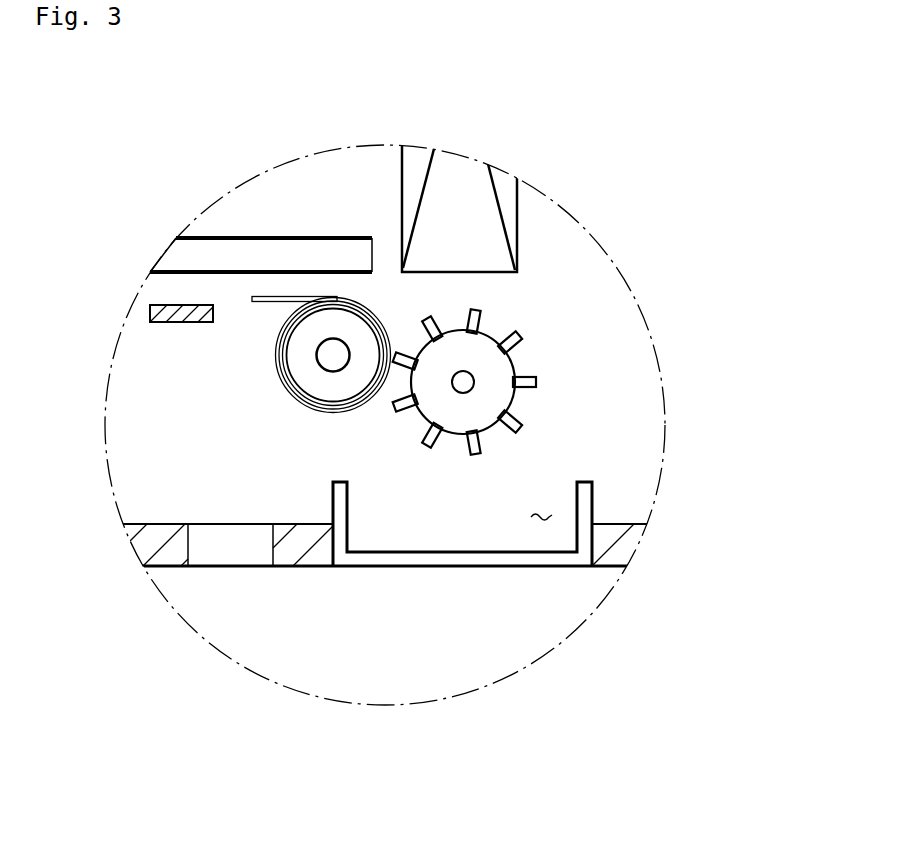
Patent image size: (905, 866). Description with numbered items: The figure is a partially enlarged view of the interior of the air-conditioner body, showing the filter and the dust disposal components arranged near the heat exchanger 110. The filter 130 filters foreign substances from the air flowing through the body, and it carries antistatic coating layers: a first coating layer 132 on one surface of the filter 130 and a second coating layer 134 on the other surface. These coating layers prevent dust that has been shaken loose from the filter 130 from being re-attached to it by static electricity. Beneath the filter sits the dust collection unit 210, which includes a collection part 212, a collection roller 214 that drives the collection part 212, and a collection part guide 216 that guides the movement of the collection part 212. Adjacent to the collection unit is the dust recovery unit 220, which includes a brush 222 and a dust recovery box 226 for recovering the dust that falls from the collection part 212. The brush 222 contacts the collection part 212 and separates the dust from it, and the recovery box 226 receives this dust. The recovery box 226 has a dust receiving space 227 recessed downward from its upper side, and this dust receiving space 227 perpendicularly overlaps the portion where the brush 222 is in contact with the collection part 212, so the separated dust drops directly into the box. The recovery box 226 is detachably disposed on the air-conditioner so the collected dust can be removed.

The heat exchanger 110 is at (462, 182).
The filter 130 is at (177, 257).
The first coating layer 132 is at (190, 232).
The second coating layer 134 is at (233, 273).
The dust collection unit 210 is at (343, 78).
The collection part 212 is at (282, 297).
The collection roller 214 is at (337, 322).
The collection part guide 216 is at (197, 305).
The dust recovery unit 220 is at (763, 313).
The brush 222 is at (538, 373).
The dust recovery box 226 is at (586, 502).
The dust receiving space 227 is at (545, 515).